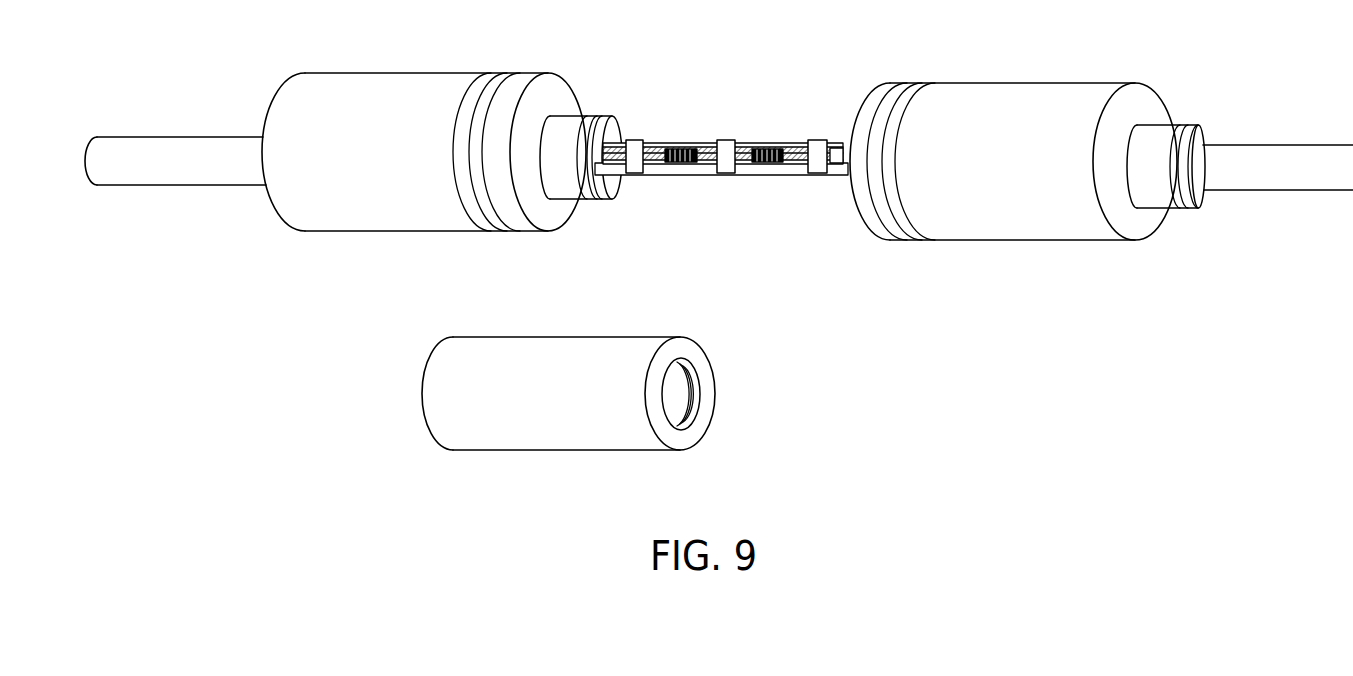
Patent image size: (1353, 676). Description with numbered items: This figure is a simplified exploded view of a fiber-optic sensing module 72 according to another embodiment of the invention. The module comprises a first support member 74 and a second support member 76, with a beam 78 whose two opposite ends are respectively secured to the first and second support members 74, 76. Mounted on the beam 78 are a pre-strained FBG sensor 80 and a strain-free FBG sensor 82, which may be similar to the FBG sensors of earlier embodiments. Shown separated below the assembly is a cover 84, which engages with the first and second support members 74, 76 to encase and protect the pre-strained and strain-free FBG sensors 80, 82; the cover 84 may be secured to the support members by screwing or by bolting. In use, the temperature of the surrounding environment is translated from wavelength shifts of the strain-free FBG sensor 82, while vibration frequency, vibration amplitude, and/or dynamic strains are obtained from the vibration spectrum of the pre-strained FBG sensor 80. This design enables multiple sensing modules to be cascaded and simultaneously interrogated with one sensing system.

The fiber-optic sensing module 72 is at (80, 82).
The first support member 74 is at (338, 213).
The second support member 76 is at (1030, 220).
The beam 78 is at (721, 154).
The pre-strained FBG sensor 80 is at (680, 163).
The strain-free FBG sensor 82 is at (764, 163).
The cover 84 is at (495, 428).